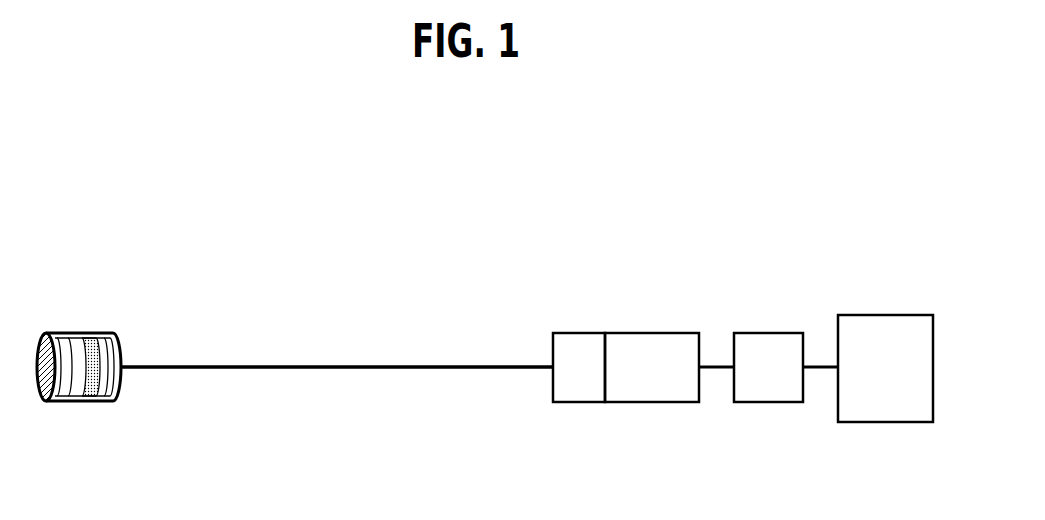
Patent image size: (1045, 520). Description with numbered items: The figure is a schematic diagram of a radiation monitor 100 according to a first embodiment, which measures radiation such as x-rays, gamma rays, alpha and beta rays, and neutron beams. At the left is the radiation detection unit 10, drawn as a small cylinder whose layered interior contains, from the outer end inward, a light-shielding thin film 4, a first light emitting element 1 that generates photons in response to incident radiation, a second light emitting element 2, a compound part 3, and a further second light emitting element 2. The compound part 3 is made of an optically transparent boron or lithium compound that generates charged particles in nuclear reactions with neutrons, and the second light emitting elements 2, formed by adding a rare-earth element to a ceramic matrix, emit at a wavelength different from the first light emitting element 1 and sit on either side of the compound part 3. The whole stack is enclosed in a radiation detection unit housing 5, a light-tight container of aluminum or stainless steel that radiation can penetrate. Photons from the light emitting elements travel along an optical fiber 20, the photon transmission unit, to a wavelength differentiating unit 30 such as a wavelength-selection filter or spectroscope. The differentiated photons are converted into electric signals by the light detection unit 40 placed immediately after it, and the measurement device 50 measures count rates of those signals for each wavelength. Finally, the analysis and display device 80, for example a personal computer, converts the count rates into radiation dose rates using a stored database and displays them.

The radiation monitor 100 is at (471, 234).
The radiation detection unit 10 is at (17, 272).
The first light emitting element 1 is at (58, 341).
The second light emitting element 2 is at (75, 393).
The compound part 3 is at (87, 341).
The light-shielding thin film 4 is at (38, 363).
The radiation detection unit housing 5 is at (121, 344).
The optical fiber 20 is at (318, 365).
The wavelength differentiating unit 30 is at (579, 333).
The light detection unit 40 is at (652, 333).
The measurement device 50 is at (770, 333).
The analysis and display device 80 is at (884, 315).